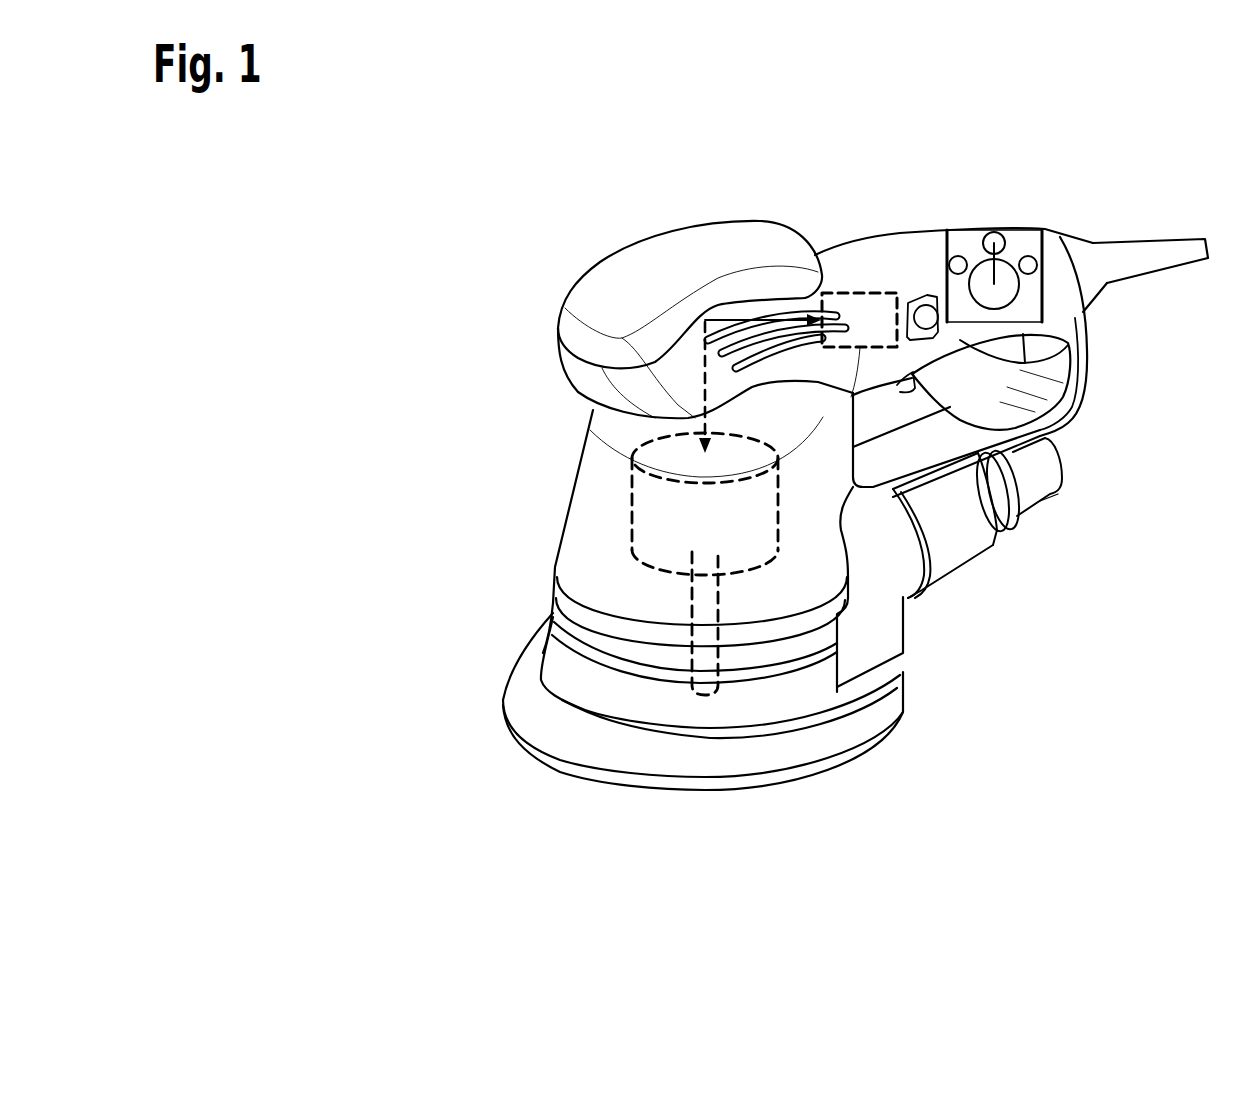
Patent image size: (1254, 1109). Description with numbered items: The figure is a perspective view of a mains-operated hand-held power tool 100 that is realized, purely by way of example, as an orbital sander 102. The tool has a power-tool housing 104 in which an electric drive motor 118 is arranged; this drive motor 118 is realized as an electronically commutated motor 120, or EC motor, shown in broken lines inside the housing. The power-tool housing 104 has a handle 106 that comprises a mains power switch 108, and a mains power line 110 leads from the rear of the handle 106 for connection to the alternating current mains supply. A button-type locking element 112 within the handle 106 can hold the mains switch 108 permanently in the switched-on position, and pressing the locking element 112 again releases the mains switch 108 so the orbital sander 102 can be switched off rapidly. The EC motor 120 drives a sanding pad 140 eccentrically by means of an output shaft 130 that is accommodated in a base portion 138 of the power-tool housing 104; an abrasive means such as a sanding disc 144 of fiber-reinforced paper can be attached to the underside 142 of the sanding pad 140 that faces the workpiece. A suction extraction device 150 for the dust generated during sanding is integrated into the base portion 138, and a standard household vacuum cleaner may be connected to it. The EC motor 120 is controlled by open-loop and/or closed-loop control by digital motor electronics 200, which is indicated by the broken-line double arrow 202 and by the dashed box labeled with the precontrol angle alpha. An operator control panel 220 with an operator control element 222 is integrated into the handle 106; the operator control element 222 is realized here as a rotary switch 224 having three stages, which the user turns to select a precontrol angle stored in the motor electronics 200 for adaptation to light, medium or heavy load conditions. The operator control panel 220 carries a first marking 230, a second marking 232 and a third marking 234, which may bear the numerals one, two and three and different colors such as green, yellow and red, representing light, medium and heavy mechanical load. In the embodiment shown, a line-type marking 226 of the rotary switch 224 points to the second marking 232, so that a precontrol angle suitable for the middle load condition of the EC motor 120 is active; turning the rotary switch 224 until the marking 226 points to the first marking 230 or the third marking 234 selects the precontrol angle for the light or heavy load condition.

The hand-held power tool 100 is at (582, 312).
The orbital sander 102 is at (477, 240).
The power-tool housing 104 is at (535, 538).
The handle 106 is at (933, 292).
The mains power switch 108 is at (1045, 434).
The mains power line 110 is at (1167, 250).
The button-type locking element 112 is at (877, 235).
The electric drive motor 118 is at (574, 504).
The electronically commutated motor 120 is at (630, 486).
The output shaft 130 is at (718, 652).
The base portion 138 is at (558, 662).
The sanding pad 140 is at (528, 709).
The underside 142 is at (720, 810).
The sanding disc 144 is at (580, 767).
The suction extraction device 150 is at (1057, 497).
The motor electronics 200 is at (877, 293).
The broken-line double arrow 202 is at (718, 318).
The operator control panel 220 is at (1070, 350).
The operator control element 222 is at (1098, 291).
The rotary switch 224 is at (1028, 315).
The line-type marking 226 is at (1083, 312).
The first marking 230 is at (952, 256).
The second marking 232 is at (995, 233).
The third marking 234 is at (1034, 257).